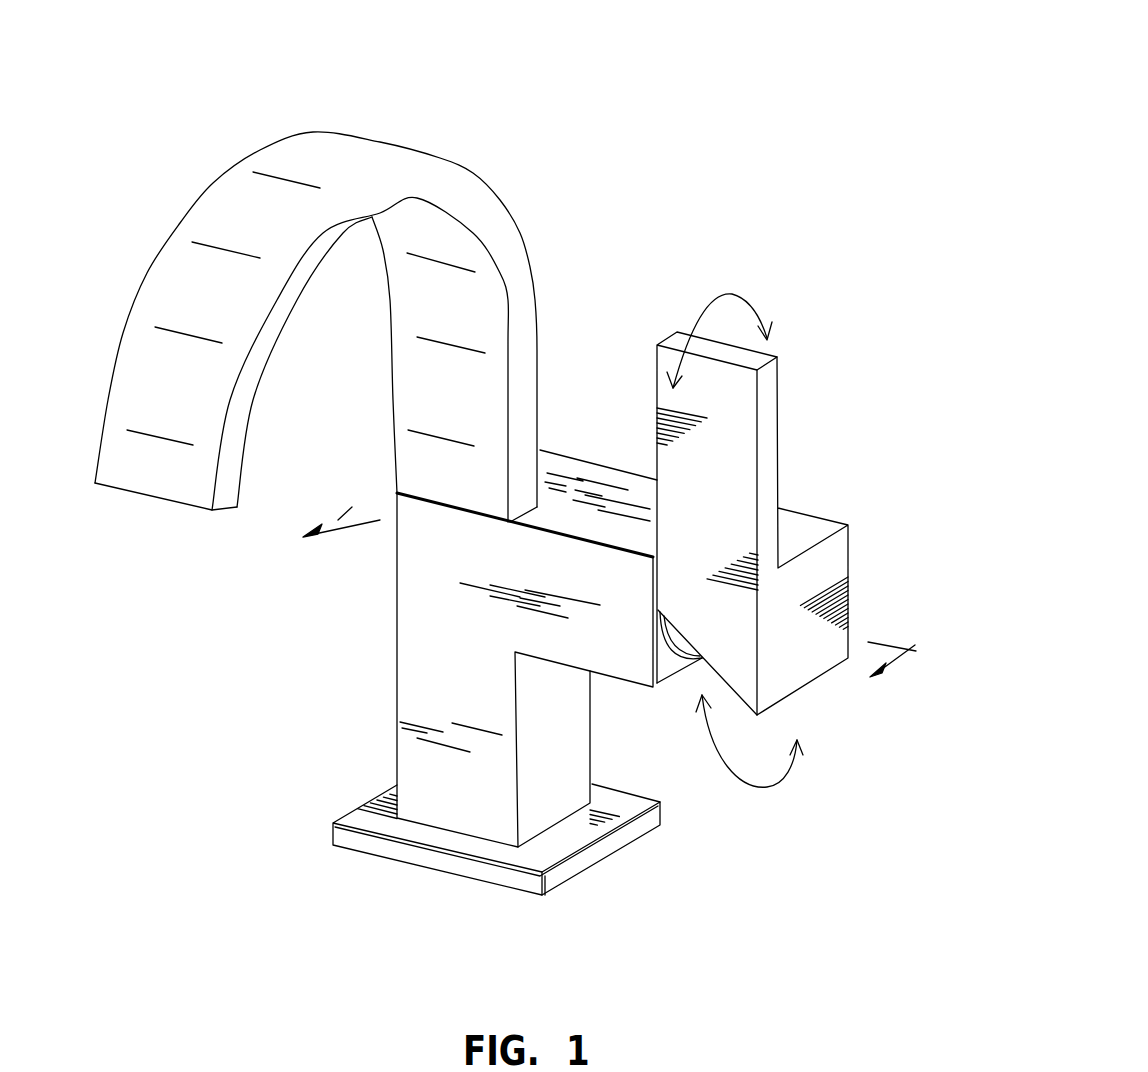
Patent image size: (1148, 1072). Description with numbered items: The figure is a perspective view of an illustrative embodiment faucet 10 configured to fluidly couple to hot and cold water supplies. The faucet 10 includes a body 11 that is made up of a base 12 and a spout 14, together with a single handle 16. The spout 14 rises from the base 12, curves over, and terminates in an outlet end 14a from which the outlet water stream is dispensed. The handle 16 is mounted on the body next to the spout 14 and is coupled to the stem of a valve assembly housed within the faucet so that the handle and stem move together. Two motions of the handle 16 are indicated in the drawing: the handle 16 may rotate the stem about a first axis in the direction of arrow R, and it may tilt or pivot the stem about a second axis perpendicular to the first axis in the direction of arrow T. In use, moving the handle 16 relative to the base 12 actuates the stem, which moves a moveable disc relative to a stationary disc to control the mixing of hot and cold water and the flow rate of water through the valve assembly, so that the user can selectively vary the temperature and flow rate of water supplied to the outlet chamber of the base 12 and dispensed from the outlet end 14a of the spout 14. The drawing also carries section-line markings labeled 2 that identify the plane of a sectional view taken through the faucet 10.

The faucet 10 is at (680, 100).
The body 11 is at (490, 302).
The base 12 is at (423, 641).
The spout 14 is at (218, 210).
The outlet end 14a is at (147, 508).
The handle 16 is at (770, 465).
The arrow R is at (737, 296).
The arrow T is at (767, 787).
The section line 2- 2 is at (594, 603).